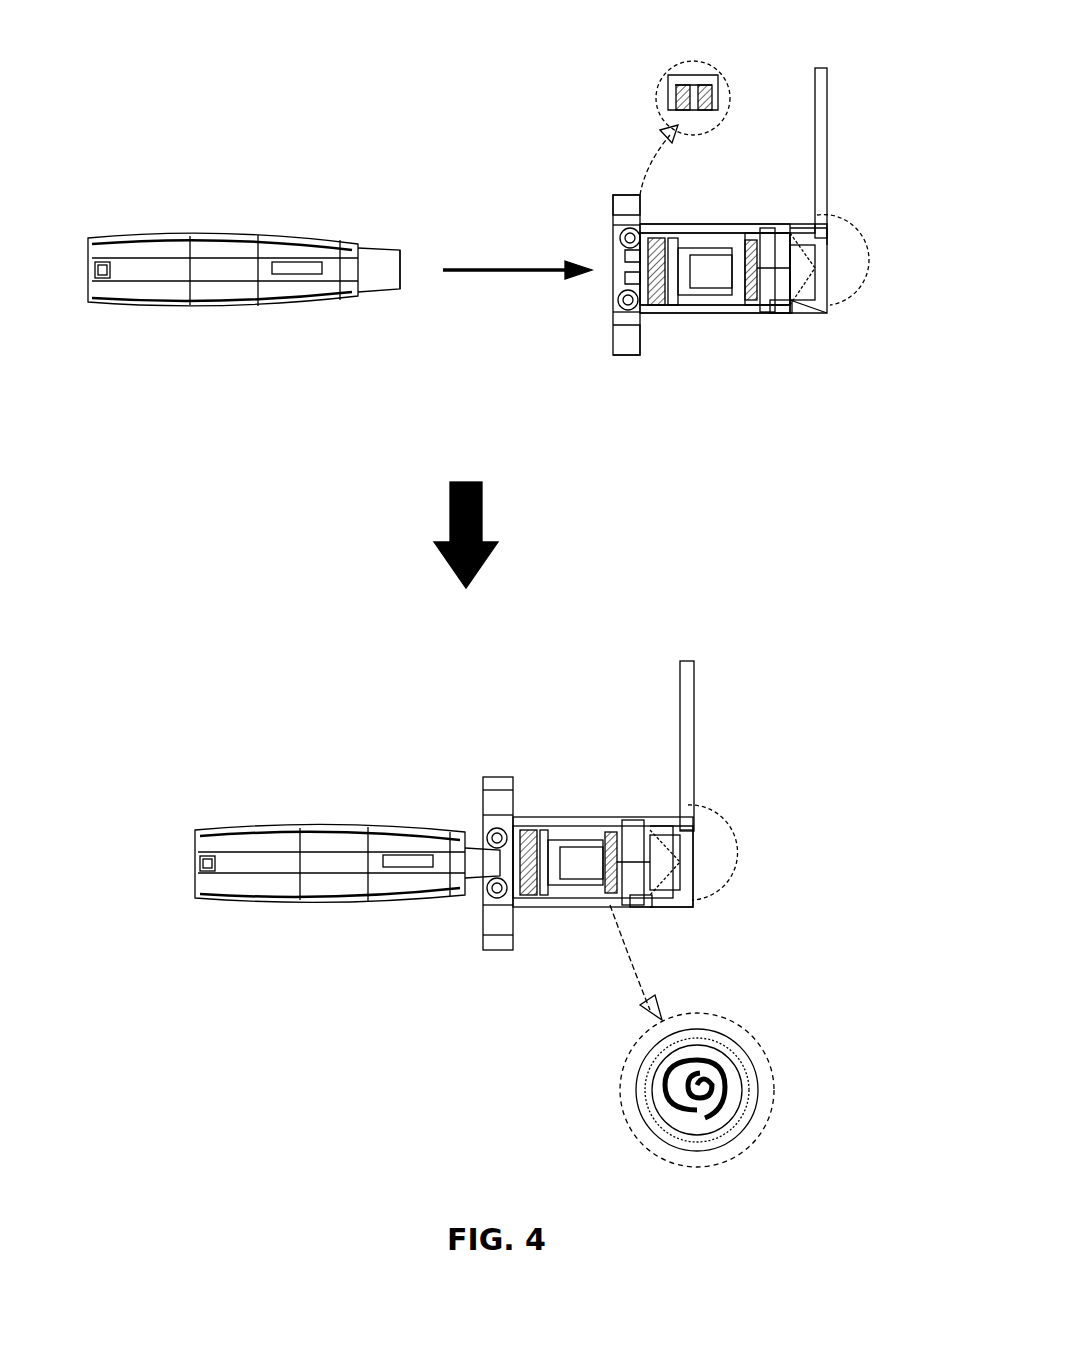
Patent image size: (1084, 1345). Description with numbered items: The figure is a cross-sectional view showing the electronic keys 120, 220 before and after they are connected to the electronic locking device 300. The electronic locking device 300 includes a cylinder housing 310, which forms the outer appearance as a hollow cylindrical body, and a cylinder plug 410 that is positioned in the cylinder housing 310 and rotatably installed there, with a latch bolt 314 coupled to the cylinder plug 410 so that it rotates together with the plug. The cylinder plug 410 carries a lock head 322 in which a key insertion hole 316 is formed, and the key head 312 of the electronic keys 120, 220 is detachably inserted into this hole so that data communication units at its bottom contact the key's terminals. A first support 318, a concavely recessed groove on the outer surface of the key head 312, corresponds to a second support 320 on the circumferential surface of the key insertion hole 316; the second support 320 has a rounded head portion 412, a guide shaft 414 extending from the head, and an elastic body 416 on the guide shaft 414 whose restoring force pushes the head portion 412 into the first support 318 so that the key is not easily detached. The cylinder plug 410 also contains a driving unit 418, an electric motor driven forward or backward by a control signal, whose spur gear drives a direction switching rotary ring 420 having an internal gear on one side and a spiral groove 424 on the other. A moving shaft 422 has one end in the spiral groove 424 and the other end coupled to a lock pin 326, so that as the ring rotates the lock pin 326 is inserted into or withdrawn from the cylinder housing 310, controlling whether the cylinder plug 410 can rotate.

The electronic key 120 is at (260, 185).
The electronic key 220 is at (223, 201).
The electronic locking device 300 is at (707, 260).
The cylinder housing 310 is at (655, 315).
The key head 312 is at (363, 240).
The latch bolt 314 is at (828, 130).
The key insertion hole 316 is at (612, 270).
The first support 318 is at (385, 290).
The second support 320 is at (615, 310).
The lock head 322 is at (612, 298).
The lock pin 326 is at (778, 315).
The cylinder plug 410 is at (700, 260).
The head portion 412 is at (668, 115).
The guide shaft 414 is at (712, 75).
The elastic body 416 is at (678, 92).
The driving unit 418 is at (660, 240).
The direction switching rotary ring 420 is at (755, 235).
The moving shaft 422 is at (825, 235).
The spiral groove 424 is at (735, 1088).